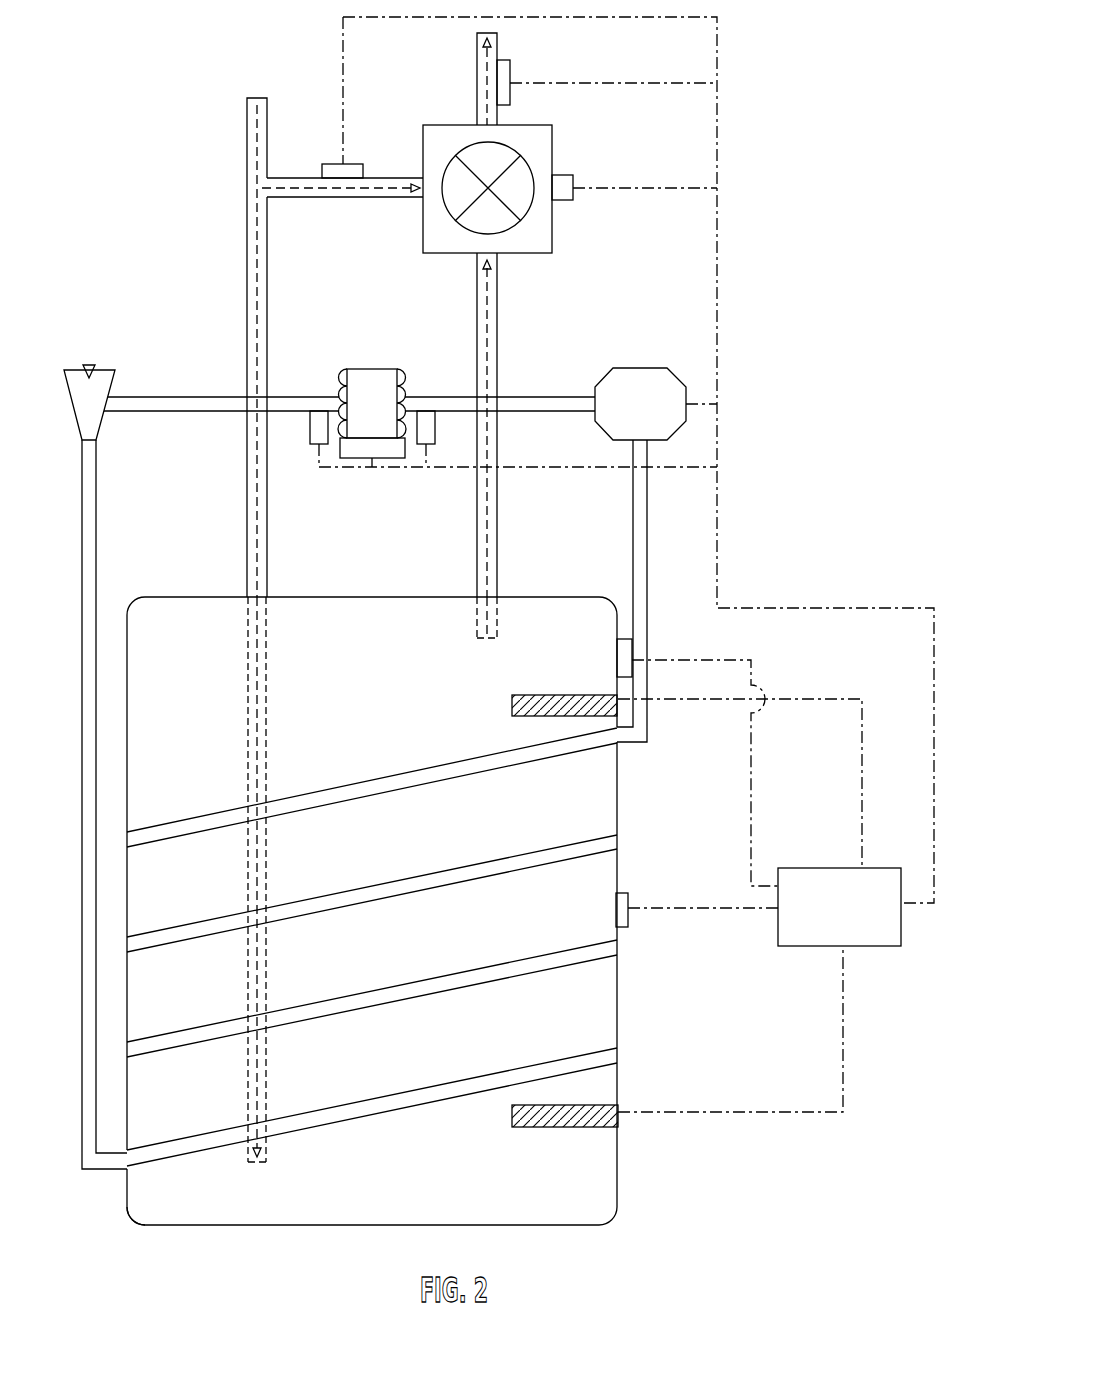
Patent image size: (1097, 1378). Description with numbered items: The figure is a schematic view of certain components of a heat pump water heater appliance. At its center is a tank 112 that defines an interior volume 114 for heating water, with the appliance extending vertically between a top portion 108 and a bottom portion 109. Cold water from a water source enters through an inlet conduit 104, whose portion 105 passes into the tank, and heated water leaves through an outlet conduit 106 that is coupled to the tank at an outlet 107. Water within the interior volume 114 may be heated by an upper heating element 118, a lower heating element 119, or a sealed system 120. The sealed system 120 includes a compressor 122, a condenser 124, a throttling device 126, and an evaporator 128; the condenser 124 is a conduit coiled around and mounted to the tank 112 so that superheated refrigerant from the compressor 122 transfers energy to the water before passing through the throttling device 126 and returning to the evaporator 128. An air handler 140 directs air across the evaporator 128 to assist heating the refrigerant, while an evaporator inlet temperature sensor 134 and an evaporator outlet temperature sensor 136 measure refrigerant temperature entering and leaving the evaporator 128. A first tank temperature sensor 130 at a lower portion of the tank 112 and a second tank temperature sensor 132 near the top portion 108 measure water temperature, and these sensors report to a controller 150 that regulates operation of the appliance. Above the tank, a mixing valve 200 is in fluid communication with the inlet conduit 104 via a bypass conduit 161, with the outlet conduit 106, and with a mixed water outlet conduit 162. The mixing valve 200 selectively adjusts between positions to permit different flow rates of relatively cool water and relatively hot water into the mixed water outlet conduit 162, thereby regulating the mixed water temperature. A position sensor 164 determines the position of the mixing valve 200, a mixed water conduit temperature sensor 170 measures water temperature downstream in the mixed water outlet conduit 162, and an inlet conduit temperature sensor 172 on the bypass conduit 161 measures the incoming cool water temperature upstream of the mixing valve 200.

The inlet conduit 104 is at (247, 336).
The cold pipe portion within tank 105 is at (274, 594).
The outlet conduit 106 is at (477, 336).
The outlet of tank 107 is at (503, 592).
The top portion 108 is at (117, 588).
The bottom portion 109 is at (124, 1232).
The tank 112 is at (617, 806).
The interior volume 114 is at (346, 648).
The upper heating element 118 is at (512, 706).
The lower heating element 119 is at (512, 1113).
The sealed system 120 is at (634, 354).
The compressor 122 is at (597, 382).
The condenser 124 is at (384, 792).
The throttling device 126 is at (117, 378).
The evaporator 128 is at (362, 368).
The first tank temperature sensor 130 is at (628, 900).
The second tank temperature sensor 132 is at (617, 660).
The evaporator inlet temperature sensor 134 is at (310, 437).
The evaporator outlet temperature sensor 136 is at (437, 440).
The air handler 140 is at (360, 458).
The controller 150 is at (857, 923).
The bypass conduit 161 is at (345, 198).
The mixed water outlet conduit 162 is at (477, 50).
The position sensor 164 is at (574, 186).
The mixed water conduit temperature sensor 170 is at (511, 72).
The inlet conduit temperature sensor 172 is at (322, 171).
The mixing valve 200 is at (548, 253).